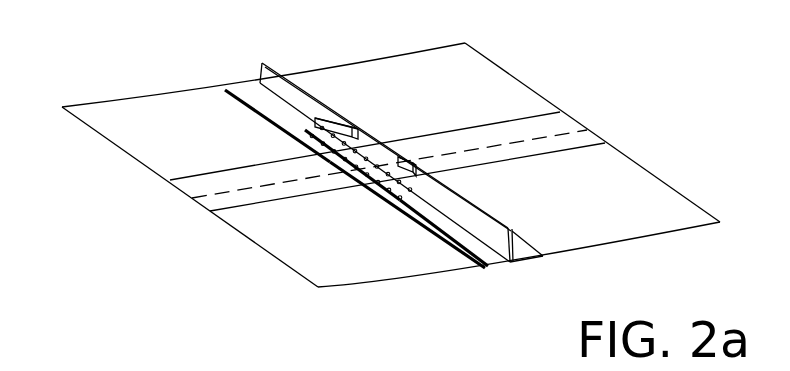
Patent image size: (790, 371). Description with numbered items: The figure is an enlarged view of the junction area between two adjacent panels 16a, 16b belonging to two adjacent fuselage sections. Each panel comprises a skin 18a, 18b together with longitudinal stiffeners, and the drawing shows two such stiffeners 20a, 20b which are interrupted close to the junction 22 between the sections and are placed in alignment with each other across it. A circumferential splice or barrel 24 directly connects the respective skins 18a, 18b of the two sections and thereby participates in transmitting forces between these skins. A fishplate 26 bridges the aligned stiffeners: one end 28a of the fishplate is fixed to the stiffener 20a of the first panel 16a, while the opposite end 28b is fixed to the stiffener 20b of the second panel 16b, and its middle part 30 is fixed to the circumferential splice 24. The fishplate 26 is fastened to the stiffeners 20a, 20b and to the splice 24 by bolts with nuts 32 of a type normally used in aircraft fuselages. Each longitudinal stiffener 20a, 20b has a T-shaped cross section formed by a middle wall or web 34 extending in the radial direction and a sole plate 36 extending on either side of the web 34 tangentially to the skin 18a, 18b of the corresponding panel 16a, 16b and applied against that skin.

The panel 16a is at (150, 172).
The panel 16b is at (303, 276).
The skin 18a is at (113, 126).
The skin 18b is at (343, 271).
The longitudinal stiffener 20a is at (260, 76).
The longitudinal stiffener 20b is at (523, 252).
The junction 22 is at (212, 200).
The circumferential splice 24 is at (580, 138).
The fishplate 26 is at (305, 130).
The end 28a is at (300, 148).
The opposite end 28b is at (362, 186).
The middle part 30 is at (376, 182).
The bolts with nuts 32 is at (395, 213).
The web 34 is at (490, 230).
The sole plate 36 is at (462, 240).